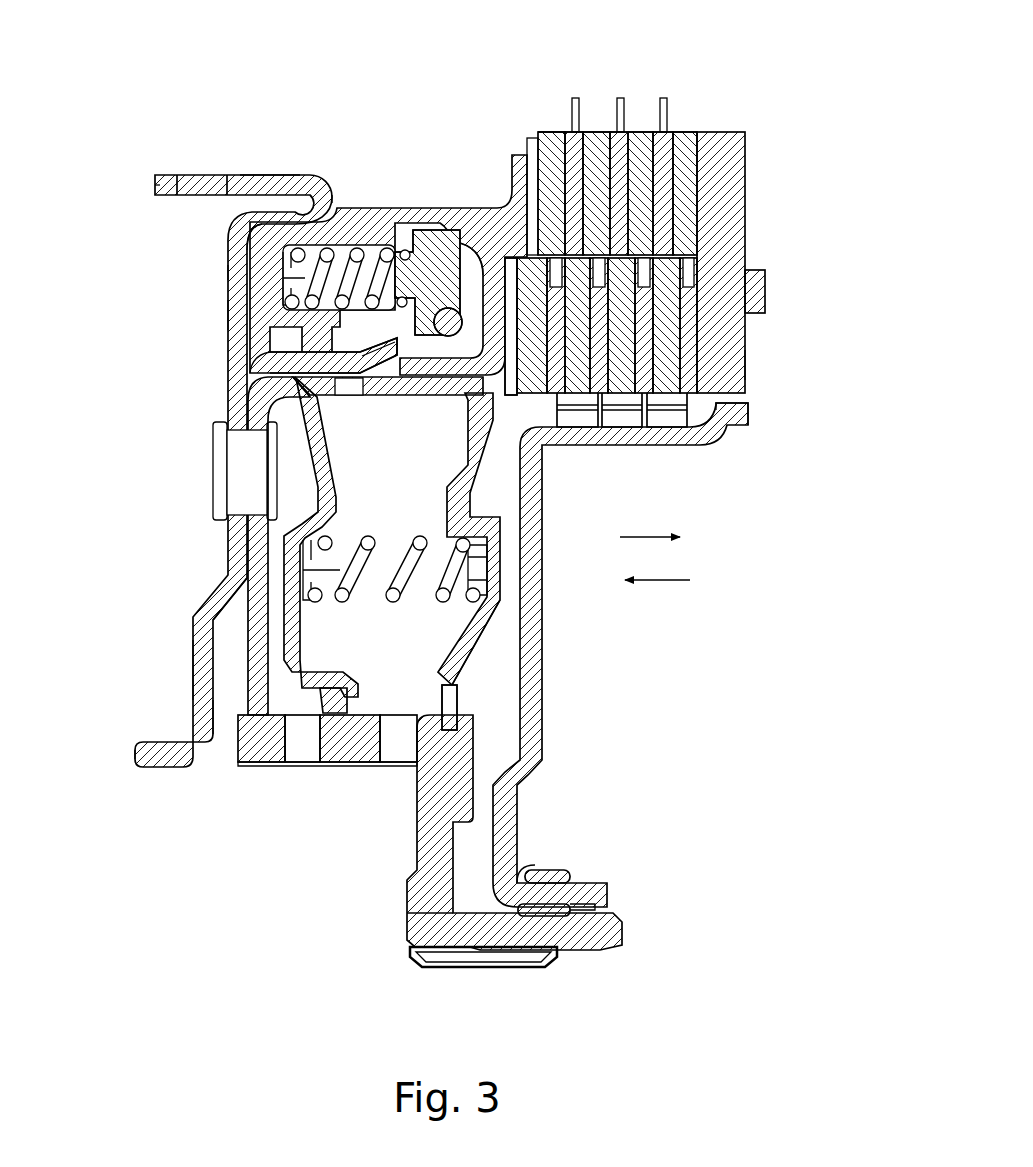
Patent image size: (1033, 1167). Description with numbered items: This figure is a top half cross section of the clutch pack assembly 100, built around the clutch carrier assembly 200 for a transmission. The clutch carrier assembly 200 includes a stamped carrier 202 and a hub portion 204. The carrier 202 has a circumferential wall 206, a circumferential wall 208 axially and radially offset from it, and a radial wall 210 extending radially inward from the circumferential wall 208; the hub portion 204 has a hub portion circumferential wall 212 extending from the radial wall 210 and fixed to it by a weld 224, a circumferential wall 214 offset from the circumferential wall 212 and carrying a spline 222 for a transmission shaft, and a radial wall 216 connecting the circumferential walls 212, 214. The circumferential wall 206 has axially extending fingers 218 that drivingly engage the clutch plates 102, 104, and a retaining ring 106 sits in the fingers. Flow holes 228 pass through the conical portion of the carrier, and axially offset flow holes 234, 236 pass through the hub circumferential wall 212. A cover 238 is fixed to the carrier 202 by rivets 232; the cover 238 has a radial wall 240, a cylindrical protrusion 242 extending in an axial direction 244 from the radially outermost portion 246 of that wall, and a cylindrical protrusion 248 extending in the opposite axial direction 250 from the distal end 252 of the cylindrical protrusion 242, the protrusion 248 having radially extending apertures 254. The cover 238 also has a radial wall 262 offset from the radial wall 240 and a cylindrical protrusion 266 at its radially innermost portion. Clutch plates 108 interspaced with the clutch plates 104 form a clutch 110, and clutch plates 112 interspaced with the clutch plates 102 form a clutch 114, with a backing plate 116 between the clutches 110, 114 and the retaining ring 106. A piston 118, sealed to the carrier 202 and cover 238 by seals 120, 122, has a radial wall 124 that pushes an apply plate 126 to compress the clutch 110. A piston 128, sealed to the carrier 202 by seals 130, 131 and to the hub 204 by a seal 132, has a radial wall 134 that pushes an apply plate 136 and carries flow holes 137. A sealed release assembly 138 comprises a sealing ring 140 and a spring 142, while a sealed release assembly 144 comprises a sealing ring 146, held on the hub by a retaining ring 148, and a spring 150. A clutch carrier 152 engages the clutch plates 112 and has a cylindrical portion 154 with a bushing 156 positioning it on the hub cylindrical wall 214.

The clutch pack assembly 100 is at (670, 226).
The clutch plates 102 is at (672, 273).
The clutch plates 104 is at (643, 137).
The retaining ring 106 is at (755, 290).
The clutch plates 108 is at (668, 138).
The clutch 110 is at (643, 90).
The clutch plates 112 is at (690, 363).
The clutch 114 is at (760, 366).
The backing plate 116 is at (735, 180).
The piston 118 is at (355, 210).
The seal 120 is at (275, 352).
The seal 122 is at (260, 217).
The radial wall 124 is at (512, 178).
The apply plate 126 is at (537, 140).
The piston 128 is at (290, 633).
The seal 130 is at (222, 437).
The seal 131 is at (392, 348).
The seal 132 is at (343, 695).
The radial wall 134 is at (540, 400).
The apply plate 136 is at (468, 392).
The flow holes 137 is at (345, 395).
The sealed release assembly 138 is at (355, 390).
The sealing ring 140 is at (447, 338).
The spring 142 is at (345, 250).
The sealed release assembly 144 is at (486, 647).
The sealing ring 146 is at (490, 590).
The retaining ring 148 is at (452, 700).
The spring 150 is at (387, 597).
The clutch carrier 152 is at (715, 445).
The cylindrical portion 154 is at (583, 887).
The bushing 156 is at (543, 905).
The clutch carrier assembly 200 is at (313, 85).
The stamped carrier 202 is at (258, 387).
The hub portion 204 is at (258, 748).
The circumferential wall 206 is at (493, 265).
The circumferential wall 208 is at (273, 362).
The radial wall 210 is at (258, 545).
The hub portion circumferential wall 212 is at (350, 750).
The circumferential wall 214 is at (473, 928).
The radial wall 216 is at (425, 850).
The axially extending fingers 218 is at (513, 277).
The spline 222 is at (475, 962).
The weld 224 is at (247, 703).
The flow holes 228 is at (386, 307).
The rivets 232 is at (250, 470).
The flow holes 234 is at (303, 750).
The flow holes 236 is at (397, 750).
The cover 238 is at (237, 312).
The radial wall 240 is at (237, 257).
The cylindrical protrusion 242 is at (295, 190).
The axial direction 244 is at (655, 537).
The radially outermost portion 246 is at (237, 232).
The cylindrical protrusion 248 is at (245, 182).
The axial direction 250 is at (660, 580).
The distal end 252 is at (320, 190).
The apertures 254 is at (193, 182).
The radial wall 262 is at (202, 680).
The cylindrical protrusion 266 is at (147, 750).